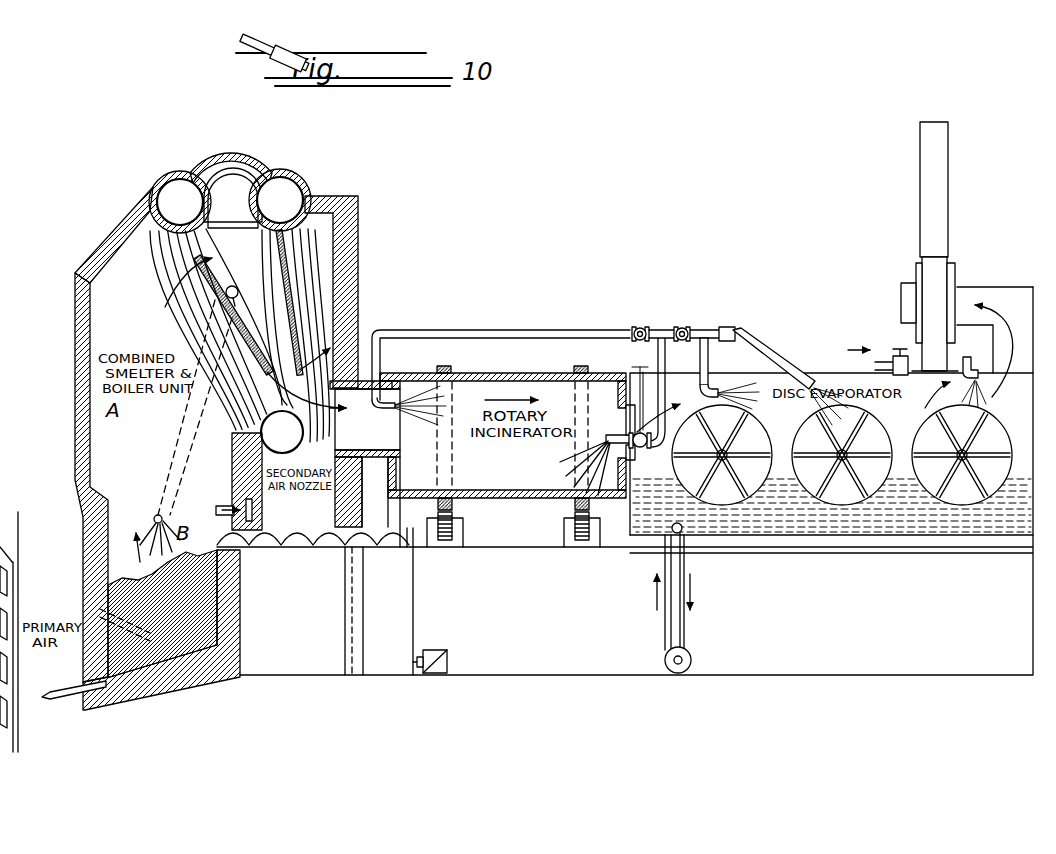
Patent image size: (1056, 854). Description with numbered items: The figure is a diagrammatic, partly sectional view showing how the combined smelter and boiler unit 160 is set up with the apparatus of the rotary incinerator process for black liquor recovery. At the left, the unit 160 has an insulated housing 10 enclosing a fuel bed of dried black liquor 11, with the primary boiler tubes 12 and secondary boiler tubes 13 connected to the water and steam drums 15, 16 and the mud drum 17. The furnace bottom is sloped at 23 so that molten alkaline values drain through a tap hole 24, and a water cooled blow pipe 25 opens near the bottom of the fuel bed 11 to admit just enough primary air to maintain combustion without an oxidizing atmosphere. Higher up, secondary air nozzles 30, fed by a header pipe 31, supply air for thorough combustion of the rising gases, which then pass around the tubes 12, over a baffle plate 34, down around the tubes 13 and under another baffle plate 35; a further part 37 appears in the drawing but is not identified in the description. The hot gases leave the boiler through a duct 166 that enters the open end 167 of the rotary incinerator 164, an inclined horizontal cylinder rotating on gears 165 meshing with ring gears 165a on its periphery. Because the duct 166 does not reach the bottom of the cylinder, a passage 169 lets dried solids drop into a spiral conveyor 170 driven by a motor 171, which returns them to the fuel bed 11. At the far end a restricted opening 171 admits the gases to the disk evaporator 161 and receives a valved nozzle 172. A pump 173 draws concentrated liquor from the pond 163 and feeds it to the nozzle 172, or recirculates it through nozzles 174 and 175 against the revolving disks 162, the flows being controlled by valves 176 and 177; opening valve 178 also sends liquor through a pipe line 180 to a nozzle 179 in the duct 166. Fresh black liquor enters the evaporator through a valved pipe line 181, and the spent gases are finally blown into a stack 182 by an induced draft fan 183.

The insulated housing 10 is at (80, 395).
The fuel bed of dried black liquor 11 is at (182, 647).
The primary boiler tubes 12 is at (161, 286).
The secondary boiler tubes 13 is at (333, 258).
The water and steam drum 15 is at (180, 202).
The steam drum 16 is at (280, 200).
The mud drum 17 is at (282, 432).
The sloped furnace bottom 23 is at (130, 688).
The tap hole 24 is at (68, 689).
The water cooled blow pipe 25 is at (44, 612).
The secondary air nozzles 30 is at (216, 511).
The header pipe 31 is at (256, 500).
The baffle plate 34 is at (232, 332).
The baffle plate 35 is at (300, 306).
The air duct 37 is at (178, 416).
The combined smelter and boiler unit 160 is at (94, 257).
The disk evaporator 161 is at (894, 542).
The disks 162 is at (735, 495).
The liquor pond 163 is at (712, 528).
The rotary incinerator 164 is at (523, 493).
The gears 165 is at (583, 540).
The ring gears 165a is at (445, 373).
The duct 166 is at (382, 384).
The open end 167 is at (398, 470).
The passage 169 is at (371, 477).
The spiral conveyor 170 is at (338, 544).
The motor 171 is at (432, 660).
The valved nozzle 172 is at (664, 395).
The pump 173 is at (692, 660).
The nozzle 174 is at (705, 358).
The nozzle 175 is at (768, 358).
The valve 176 is at (641, 390).
The valve 177 is at (713, 373).
The valve 178 is at (640, 327).
The nozzle 179 is at (365, 419).
The pipe line 180 is at (516, 330).
The valved pipe line 181 is at (882, 358).
The stack 182 is at (946, 215).
The induced draft fan 183 is at (940, 274).